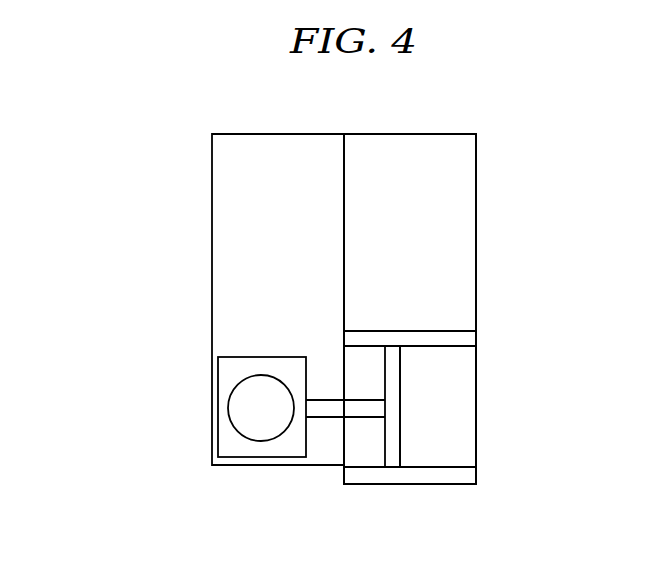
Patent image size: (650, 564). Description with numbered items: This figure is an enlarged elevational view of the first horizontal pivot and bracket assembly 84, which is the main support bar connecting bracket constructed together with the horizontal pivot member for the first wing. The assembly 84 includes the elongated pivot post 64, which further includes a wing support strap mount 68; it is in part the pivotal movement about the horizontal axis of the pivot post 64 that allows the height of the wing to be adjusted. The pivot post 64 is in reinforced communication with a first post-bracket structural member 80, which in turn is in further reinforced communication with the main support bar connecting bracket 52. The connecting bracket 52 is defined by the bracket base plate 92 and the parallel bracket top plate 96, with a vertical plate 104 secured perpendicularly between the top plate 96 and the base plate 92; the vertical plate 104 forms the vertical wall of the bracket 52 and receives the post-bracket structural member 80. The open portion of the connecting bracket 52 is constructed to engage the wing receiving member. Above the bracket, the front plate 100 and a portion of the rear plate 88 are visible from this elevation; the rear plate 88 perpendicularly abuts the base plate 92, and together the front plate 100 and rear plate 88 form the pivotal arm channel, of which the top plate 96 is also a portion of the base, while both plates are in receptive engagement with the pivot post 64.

The first horizontal pivot and bracket assembly 84 is at (123, 218).
The front plate 100 is at (450, 200).
The bracket top plate 96 is at (457, 337).
The rear plate 88 is at (442, 375).
The vertical plate 104 is at (392, 413).
The bracket base plate 92 is at (477, 487).
The first wing main support bar connecting bracket 52 is at (492, 337).
The wing support strap mount 68 is at (228, 370).
The pivot post 64 is at (265, 410).
The post-bracket structural member 80 is at (335, 408).